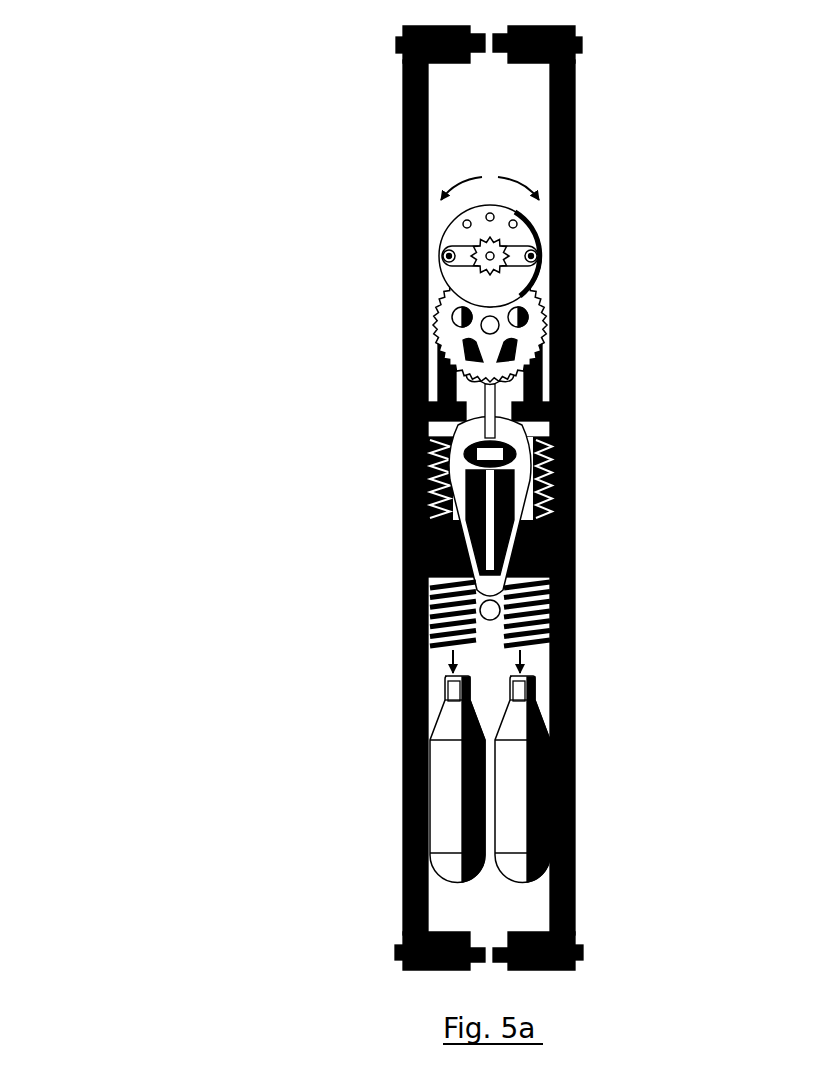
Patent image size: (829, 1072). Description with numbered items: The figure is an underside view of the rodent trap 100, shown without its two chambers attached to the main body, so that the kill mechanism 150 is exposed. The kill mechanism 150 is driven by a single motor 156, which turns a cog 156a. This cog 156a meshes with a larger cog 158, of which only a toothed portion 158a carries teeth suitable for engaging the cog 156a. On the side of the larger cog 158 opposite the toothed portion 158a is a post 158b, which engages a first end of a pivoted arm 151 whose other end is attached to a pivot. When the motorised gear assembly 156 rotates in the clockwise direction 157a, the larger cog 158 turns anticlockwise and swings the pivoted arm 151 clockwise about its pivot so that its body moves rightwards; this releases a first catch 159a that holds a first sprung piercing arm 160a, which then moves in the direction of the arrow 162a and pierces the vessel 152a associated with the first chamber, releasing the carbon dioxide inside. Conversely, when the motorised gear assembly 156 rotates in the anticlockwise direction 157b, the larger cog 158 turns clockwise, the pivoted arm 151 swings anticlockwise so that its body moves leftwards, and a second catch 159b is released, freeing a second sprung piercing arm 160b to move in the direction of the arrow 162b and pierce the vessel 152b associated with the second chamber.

The rodent trap 100 is at (150, 415).
The kill mechanism 150 is at (608, 468).
The pivoted arm 151 is at (472, 428).
The vessel 152a is at (445, 770).
The vessel 152b is at (515, 823).
The motor 156 is at (515, 237).
The cog 156a is at (480, 253).
The clockwise direction 157a is at (517, 176).
The anticlockwise direction 157b is at (463, 176).
The larger cog 158 is at (523, 332).
The toothed portion 158a is at (513, 278).
The post 158b is at (507, 372).
The first catch 159a is at (430, 405).
The second catch 159b is at (576, 412).
The first sprung piercing arm 160a is at (443, 608).
The second sprung piercing arm 160b is at (540, 606).
The arrow 162a is at (453, 655).
The arrow 162b is at (523, 655).